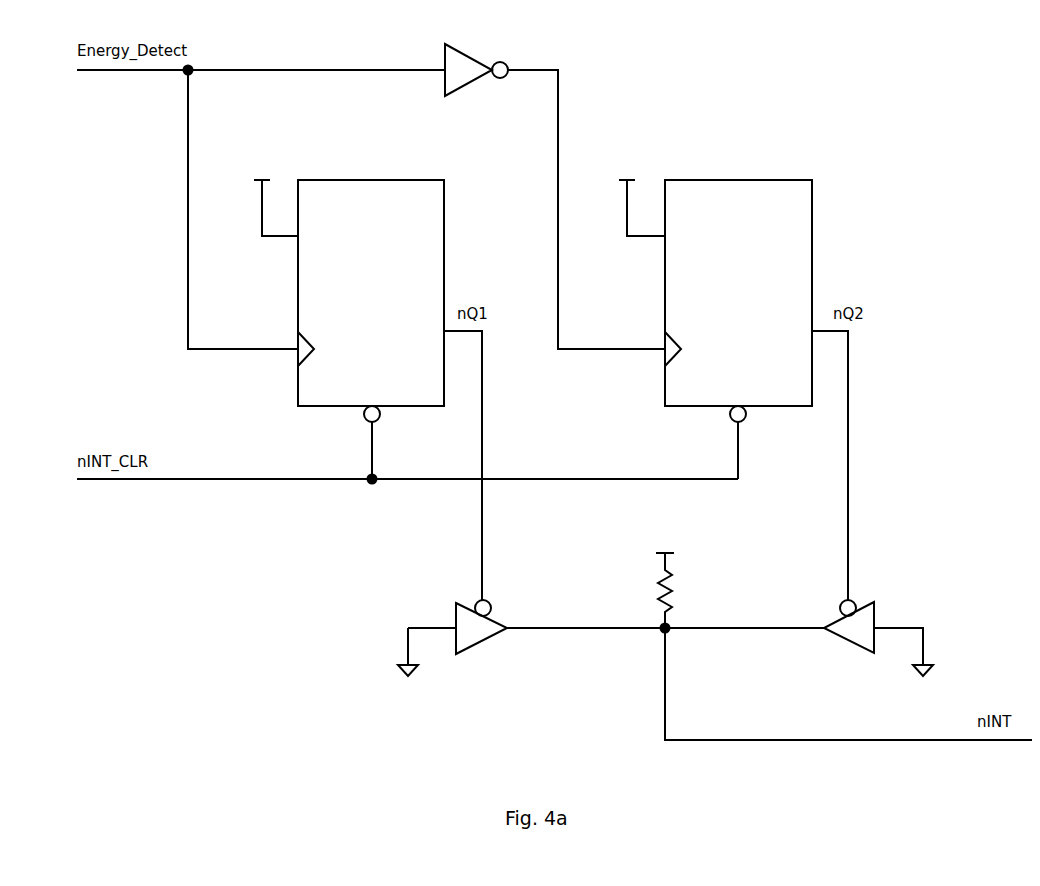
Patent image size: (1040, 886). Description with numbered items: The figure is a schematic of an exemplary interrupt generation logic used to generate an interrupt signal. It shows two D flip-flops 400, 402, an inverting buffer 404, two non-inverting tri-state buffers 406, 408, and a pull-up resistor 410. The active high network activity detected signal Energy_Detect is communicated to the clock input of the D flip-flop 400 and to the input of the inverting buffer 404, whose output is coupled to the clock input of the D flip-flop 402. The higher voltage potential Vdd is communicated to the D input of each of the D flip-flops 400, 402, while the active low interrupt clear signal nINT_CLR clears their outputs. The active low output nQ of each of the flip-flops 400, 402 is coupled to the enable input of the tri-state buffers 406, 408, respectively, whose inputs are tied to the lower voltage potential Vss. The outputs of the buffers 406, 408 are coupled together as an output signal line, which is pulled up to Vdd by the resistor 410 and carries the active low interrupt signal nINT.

The D flip-flop 400 is at (346, 316).
The D flip-flop 402 is at (712, 316).
The inverting buffer 404 is at (555, 196).
The non-inverting tri-state buffer 406 is at (530, 647).
The non-inverting tri-state buffer 408 is at (799, 647).
The pull-up resistor 410 is at (685, 577).